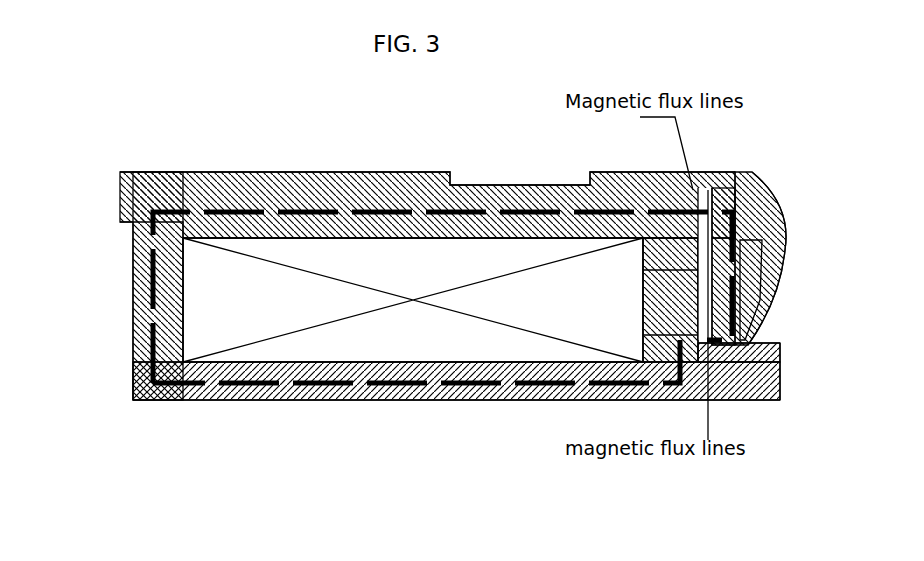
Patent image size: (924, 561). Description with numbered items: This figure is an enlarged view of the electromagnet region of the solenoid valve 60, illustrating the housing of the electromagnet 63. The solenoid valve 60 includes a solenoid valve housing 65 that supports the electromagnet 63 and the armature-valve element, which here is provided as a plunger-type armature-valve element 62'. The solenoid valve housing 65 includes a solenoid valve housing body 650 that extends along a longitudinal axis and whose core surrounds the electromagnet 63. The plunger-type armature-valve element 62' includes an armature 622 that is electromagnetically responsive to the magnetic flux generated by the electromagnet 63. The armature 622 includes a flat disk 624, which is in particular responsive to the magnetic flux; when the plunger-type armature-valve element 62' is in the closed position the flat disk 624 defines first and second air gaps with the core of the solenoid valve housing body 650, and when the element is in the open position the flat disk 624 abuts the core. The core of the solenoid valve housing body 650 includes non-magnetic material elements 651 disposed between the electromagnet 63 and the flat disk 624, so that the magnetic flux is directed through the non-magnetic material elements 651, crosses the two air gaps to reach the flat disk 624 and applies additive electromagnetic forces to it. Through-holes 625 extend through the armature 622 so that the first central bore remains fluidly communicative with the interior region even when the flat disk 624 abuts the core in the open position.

The solenoid valve 60 is at (173, 400).
The electromagnet 63 is at (262, 350).
The solenoid valve housing 65 is at (137, 293).
The solenoid valve housing body 650 is at (333, 212).
The non-magnetic material elements 651 is at (636, 308).
The plunger-type armature-valve element 62' is at (789, 194).
The armature 622 is at (785, 290).
The flat disk 624 is at (720, 303).
The through-holes 625 is at (755, 223).